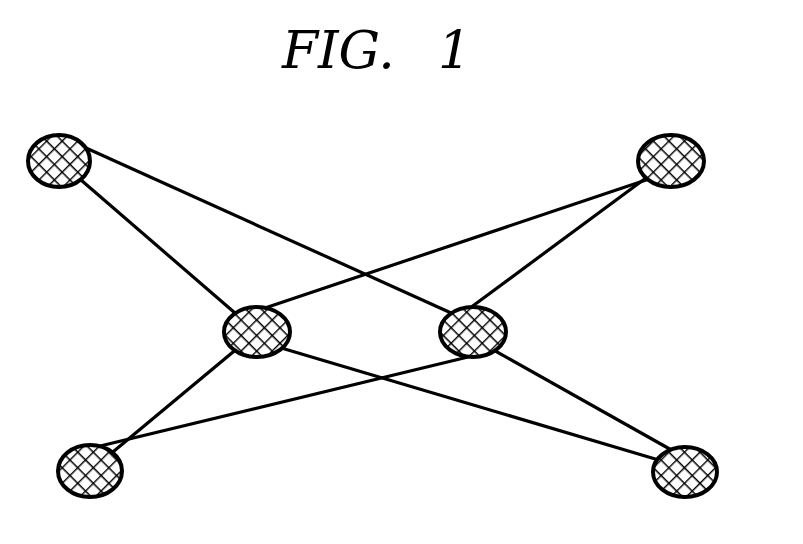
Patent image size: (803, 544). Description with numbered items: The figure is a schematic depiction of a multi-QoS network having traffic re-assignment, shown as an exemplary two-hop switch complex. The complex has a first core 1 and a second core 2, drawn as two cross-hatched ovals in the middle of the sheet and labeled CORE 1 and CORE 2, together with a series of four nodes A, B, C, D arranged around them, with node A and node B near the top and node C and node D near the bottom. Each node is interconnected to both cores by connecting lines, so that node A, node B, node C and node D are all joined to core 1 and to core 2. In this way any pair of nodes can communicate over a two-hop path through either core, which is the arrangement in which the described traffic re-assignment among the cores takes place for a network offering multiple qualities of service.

The node A is at (59, 185).
The node B is at (671, 185).
The node C is at (90, 494).
The node D is at (685, 495).
The first core 1 is at (200, 331).
The second core 2 is at (530, 331).